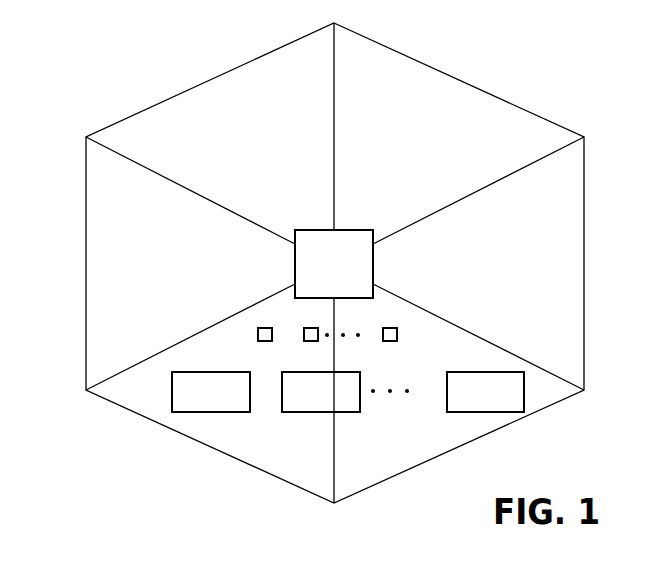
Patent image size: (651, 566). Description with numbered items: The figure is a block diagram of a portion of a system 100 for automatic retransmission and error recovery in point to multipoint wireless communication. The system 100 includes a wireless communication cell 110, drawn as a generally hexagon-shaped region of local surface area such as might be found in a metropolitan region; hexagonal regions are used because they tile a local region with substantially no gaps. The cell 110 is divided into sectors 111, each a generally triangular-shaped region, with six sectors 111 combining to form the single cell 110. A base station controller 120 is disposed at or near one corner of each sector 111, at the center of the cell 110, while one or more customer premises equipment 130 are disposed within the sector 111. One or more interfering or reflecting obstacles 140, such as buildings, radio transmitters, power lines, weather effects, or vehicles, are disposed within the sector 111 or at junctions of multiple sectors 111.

The system 100 is at (107, 48).
The wireless communication cell 110 is at (337, 258).
The sector 111 is at (337, 263).
The base station controller 120 is at (334, 254).
The customer premises equipment 130 is at (193, 412).
The obstacles 140 is at (259, 341).